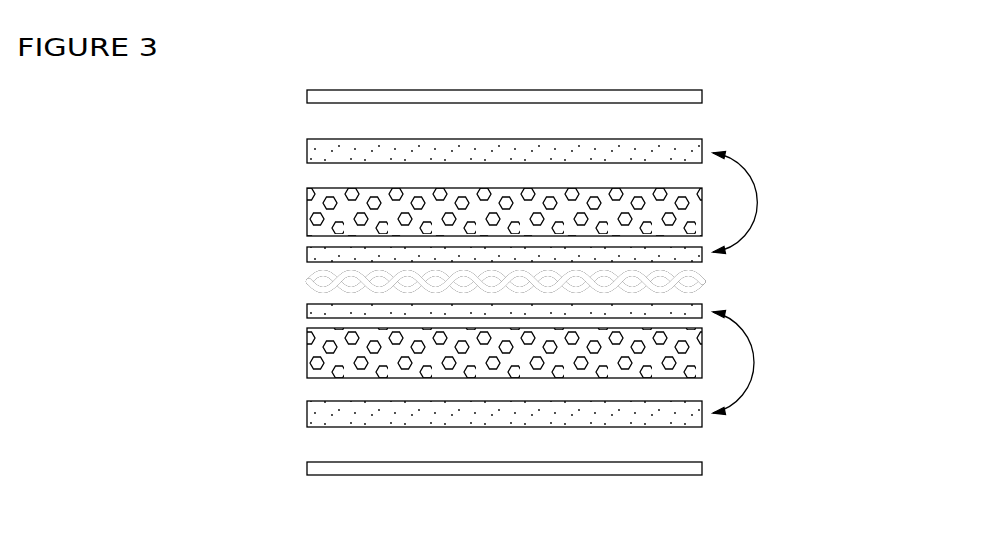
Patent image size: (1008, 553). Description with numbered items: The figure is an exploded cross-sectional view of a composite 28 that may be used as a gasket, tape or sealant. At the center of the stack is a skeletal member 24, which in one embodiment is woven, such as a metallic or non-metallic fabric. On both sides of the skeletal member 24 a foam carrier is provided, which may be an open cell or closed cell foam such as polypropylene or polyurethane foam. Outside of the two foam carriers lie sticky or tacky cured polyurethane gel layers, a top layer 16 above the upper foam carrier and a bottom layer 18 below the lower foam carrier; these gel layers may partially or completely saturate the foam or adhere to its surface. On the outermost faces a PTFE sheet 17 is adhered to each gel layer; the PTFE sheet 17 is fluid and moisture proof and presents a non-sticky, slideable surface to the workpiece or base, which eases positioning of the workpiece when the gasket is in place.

The PTFE sheet 17 is at (407, 90).
The top layer 16 is at (307, 152).
The skeletal member 24 is at (307, 283).
The bottom layer 18 is at (307, 413).
The composite 28 is at (780, 168).